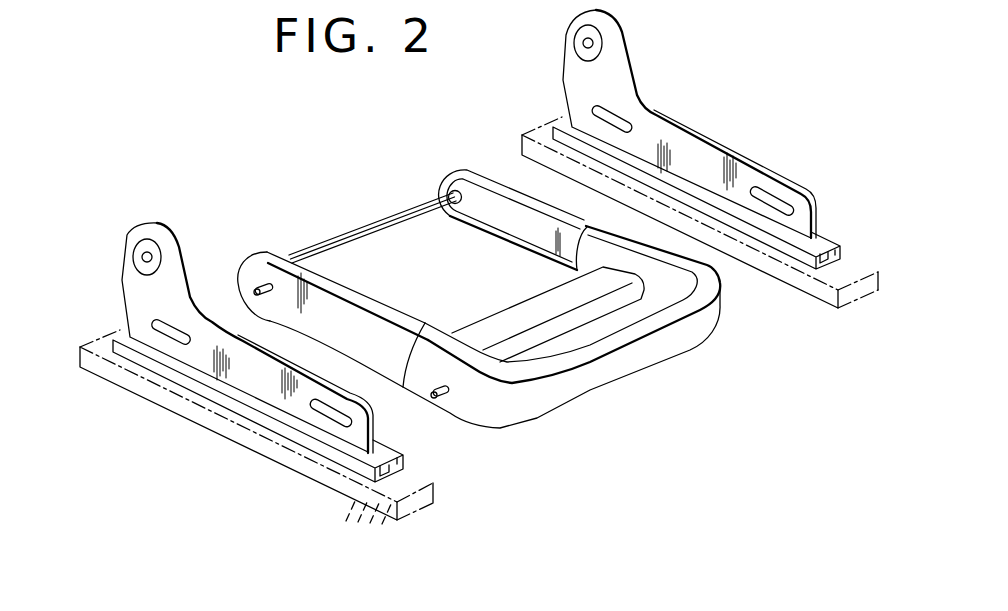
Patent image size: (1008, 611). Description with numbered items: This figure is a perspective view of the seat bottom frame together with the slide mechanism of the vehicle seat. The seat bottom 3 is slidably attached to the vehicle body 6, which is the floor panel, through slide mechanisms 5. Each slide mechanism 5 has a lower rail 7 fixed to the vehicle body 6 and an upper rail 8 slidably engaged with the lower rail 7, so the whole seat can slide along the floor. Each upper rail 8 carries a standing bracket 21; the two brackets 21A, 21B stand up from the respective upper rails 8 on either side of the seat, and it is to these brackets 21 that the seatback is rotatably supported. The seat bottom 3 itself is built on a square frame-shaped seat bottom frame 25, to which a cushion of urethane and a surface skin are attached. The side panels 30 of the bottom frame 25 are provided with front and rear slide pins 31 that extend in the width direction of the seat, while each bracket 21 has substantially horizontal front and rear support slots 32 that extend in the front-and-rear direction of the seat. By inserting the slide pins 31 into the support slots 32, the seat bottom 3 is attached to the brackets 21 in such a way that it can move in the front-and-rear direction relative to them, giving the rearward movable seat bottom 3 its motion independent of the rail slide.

The seat bottom 3 is at (623, 376).
The slide mechanism 5 is at (472, 336).
The vehicle body 6 is at (372, 520).
The lower rail 7 is at (263, 437).
The upper rail 8 is at (167, 370).
The bracket 21 is at (456, 258).
The bracket 21A is at (697, 153).
The bracket 21B is at (247, 382).
The seat bottom frame 25 is at (537, 407).
The side panel 30 is at (348, 332).
The slide pin 31 is at (259, 287).
The support slot 32 is at (153, 320).